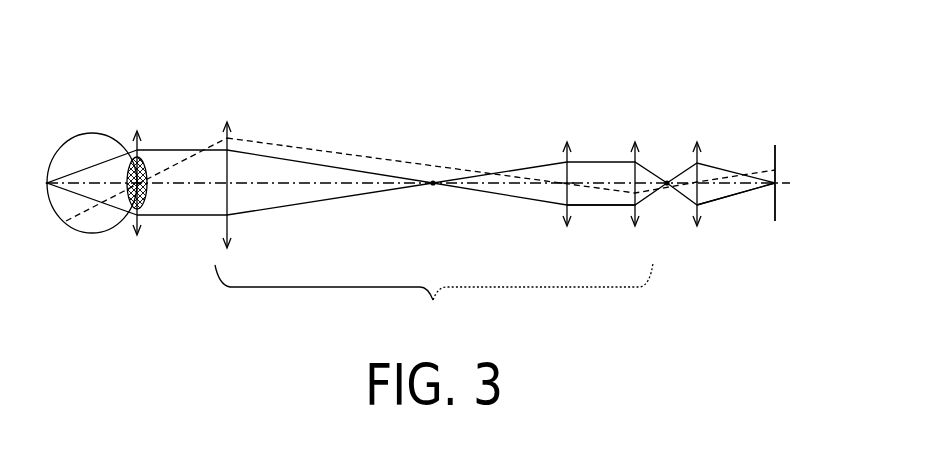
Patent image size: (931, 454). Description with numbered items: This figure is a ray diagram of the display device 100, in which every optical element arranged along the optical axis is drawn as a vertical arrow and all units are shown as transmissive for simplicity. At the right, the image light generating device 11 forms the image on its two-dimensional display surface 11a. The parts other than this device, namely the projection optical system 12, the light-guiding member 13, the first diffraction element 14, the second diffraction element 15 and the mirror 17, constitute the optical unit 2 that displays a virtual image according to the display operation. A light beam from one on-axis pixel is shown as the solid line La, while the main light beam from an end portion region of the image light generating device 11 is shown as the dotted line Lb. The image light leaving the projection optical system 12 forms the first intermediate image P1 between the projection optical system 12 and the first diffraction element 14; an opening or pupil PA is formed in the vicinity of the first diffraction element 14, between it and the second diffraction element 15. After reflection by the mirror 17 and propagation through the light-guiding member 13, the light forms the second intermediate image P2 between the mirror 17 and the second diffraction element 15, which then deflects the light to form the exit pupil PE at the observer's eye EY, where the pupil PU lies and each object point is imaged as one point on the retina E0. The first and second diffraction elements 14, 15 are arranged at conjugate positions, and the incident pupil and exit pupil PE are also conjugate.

The display device 100 is at (598, 88).
The optical unit 2 is at (460, 143).
The image light generating device 11 is at (773, 156).
The display surface 11a is at (770, 152).
The projection optical system 12 is at (692, 157).
The light-guiding member 13 is at (434, 295).
The first diffraction element 14 is at (631, 157).
The second diffraction element 15 is at (228, 141).
The mirror 17 is at (562, 157).
The first intermediate image P1 is at (667, 190).
The second intermediate image P2 is at (433, 190).
The pupil PA is at (562, 190).
The solid line light beam La is at (752, 189).
The dotted line main light beam Lb is at (612, 197).
The observer's eye EY is at (84, 145).
The retina E0 is at (61, 205).
The exit pupil PE is at (132, 208).
The pupil PU is at (147, 203).